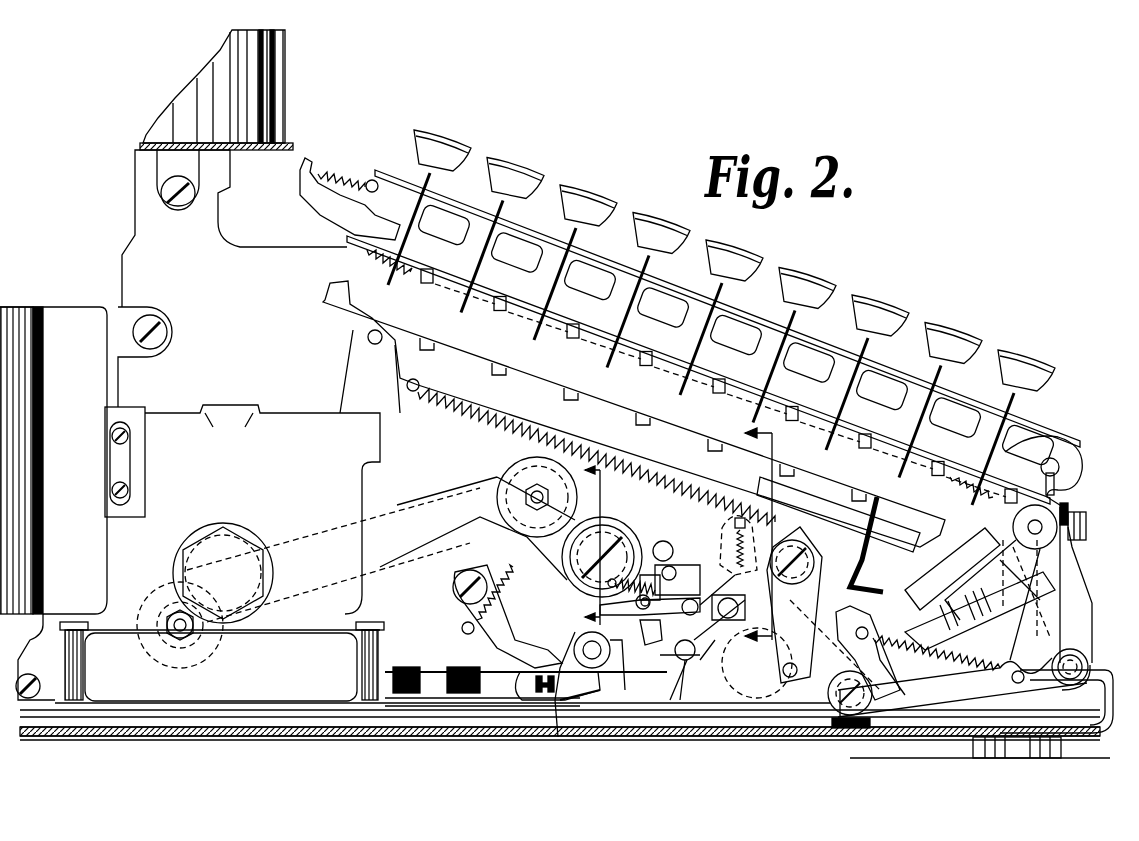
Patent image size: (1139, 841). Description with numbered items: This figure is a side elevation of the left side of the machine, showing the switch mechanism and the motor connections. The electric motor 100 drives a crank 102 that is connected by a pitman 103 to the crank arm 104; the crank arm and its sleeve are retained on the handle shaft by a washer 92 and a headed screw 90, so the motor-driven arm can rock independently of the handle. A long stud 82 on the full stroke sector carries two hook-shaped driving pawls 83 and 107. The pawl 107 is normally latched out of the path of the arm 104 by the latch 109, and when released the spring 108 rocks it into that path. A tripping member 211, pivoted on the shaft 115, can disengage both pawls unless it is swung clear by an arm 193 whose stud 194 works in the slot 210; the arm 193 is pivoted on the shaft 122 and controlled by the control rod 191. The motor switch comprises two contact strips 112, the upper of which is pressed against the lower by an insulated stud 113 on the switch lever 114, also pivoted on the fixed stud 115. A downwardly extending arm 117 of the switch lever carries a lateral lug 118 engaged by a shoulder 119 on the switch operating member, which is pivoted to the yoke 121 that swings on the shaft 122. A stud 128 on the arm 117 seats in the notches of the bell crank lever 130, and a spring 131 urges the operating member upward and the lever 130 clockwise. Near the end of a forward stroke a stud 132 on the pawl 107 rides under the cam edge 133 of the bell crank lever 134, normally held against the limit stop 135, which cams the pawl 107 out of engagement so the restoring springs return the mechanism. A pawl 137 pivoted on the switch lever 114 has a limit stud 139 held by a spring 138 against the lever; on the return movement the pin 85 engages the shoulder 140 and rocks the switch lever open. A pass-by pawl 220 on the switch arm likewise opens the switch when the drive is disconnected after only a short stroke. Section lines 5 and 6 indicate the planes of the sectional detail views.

The motor 100 is at (65, 318).
The crank 102 is at (200, 625).
The pitman 103 is at (465, 490).
The crank arm 104 is at (530, 470).
The headed screw 90 is at (612, 548).
The washer 92 is at (565, 577).
The pass-by pawl 220 is at (661, 537).
The spring 108 is at (724, 530).
The latch 109 is at (722, 550).
The stud 82 is at (714, 562).
The spring 138 is at (590, 598).
The bell crank lever 134 is at (510, 627).
The limit stop 135 is at (463, 631).
The insulated stud 113 is at (582, 663).
The limit stud 139 is at (650, 615).
The switch lever 114 is at (637, 634).
The pin 85 is at (738, 620).
The driving pawl 83 is at (673, 658).
The driving pawl 107 is at (705, 648).
The stud 128 is at (794, 605).
The fixed stud 115 is at (815, 545).
The downwardly extending arm 117 is at (815, 572).
The slot 210 is at (867, 645).
The tripping member 211 is at (895, 614).
The arm 193 is at (940, 618).
The stud 194 is at (900, 675).
The bell crank lever 130 is at (835, 645).
The spring 131 is at (1012, 672).
The control rod 191 is at (1064, 652).
The lateral lug 118 is at (834, 699).
The shoulder 119 is at (770, 680).
The stud 132 is at (680, 677).
The shoulder 140 is at (612, 690).
The contact strips 112 is at (525, 685).
The pawl 137 is at (582, 712).
The cam edge 133 is at (560, 737).
The shaft 122 is at (1066, 508).
The yoke 121 is at (1072, 540).
The section line 5 is at (603, 549).
The section line 6 is at (773, 537).